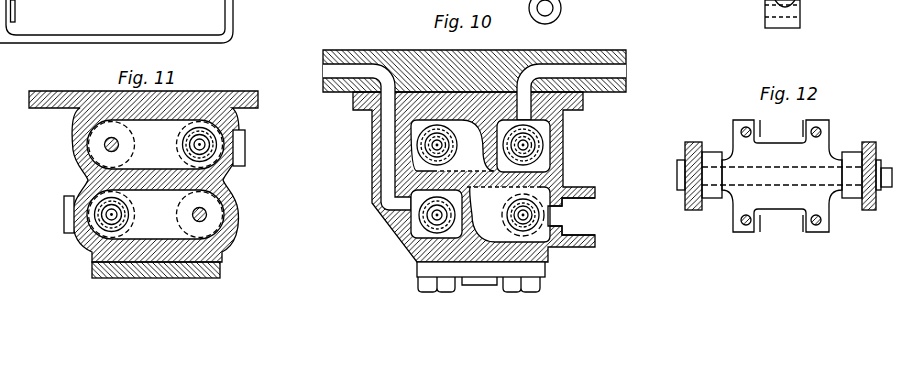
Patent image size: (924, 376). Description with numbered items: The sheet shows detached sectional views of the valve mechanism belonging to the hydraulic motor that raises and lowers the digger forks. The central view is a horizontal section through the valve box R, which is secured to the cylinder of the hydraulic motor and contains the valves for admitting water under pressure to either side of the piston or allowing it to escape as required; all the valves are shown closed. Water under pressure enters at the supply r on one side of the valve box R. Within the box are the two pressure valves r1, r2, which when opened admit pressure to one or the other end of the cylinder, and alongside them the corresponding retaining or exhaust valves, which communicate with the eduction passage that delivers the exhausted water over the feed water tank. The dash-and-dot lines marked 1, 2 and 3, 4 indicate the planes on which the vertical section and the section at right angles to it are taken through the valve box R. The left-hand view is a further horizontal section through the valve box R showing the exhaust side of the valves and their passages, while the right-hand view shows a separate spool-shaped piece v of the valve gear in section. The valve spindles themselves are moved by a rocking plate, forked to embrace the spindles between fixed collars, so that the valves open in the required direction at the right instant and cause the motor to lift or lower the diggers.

In FIG. 11, the valve box R is at (238, 232).
In FIG. 10, the valve box R is at (565, 146).
In FIG. 10, the water under pressure supply r is at (585, 226).
In FIG. 10, the pressure valve r1 is at (448, 163).
In FIG. 10, the pressure valve r2 is at (512, 212).
In FIG. 10, the section line 1 is at (400, 207).
In FIG. 10, the section line 2 is at (550, 208).
In FIG. 10, the section line 3 is at (522, 205).
In FIG. 10, the section line 4 is at (540, 222).
In FIG. 12, the valve spool v is at (787, 196).